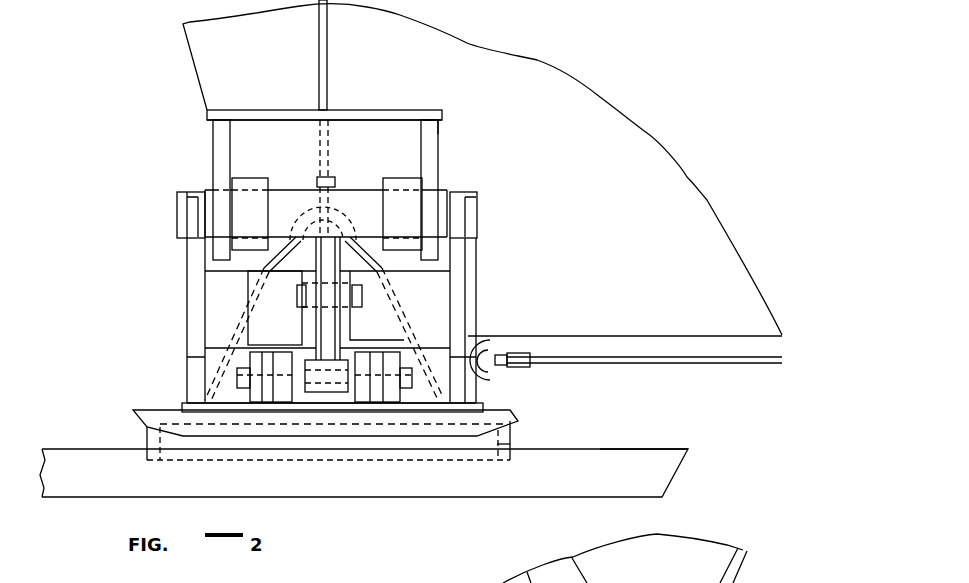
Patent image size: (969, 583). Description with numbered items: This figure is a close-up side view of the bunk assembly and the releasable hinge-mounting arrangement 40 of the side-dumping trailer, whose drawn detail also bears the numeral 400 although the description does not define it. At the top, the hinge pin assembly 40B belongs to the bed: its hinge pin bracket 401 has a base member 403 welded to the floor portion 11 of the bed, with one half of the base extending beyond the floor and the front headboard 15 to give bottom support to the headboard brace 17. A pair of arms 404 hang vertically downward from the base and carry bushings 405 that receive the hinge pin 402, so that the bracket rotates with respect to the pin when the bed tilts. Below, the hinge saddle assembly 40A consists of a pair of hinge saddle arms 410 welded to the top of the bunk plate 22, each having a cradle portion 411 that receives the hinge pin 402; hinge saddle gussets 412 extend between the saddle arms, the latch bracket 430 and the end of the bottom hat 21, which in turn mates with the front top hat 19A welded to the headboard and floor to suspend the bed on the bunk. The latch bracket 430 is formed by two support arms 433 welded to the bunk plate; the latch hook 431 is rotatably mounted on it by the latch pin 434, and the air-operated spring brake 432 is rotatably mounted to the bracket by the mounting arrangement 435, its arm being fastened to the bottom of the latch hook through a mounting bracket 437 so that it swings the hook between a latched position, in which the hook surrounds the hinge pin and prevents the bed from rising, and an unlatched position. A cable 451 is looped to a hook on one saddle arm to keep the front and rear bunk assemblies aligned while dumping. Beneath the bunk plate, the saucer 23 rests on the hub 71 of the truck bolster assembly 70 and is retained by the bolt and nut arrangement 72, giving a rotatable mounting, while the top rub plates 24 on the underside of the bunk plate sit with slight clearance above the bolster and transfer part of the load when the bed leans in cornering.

The headboard brace 17 is at (202, 58).
The front headboard 15 is at (330, 66).
The hinge pin assembly 40B is at (425, 80).
The base member 403 is at (403, 128).
The hinge pin bracket 401 is at (441, 132).
The floor portion 11 is at (635, 152).
The arms 404 is at (221, 156).
The bushings 405 is at (245, 180).
The latch hook 431 is at (327, 177).
The hinge pin 402 is at (476, 210).
The bottom hat 21 is at (293, 246).
The front top hat 19A is at (370, 242).
The cradle portion 411 is at (178, 236).
The hinge saddle arms 410 is at (465, 258).
The hinge saddle gussets 412 is at (440, 277).
The releasable hinge-mounting arrangements 40 is at (154, 313).
The latch pin 434 is at (297, 292).
The support arms 433 is at (257, 343).
The lower housing 400 is at (302, 330).
The latch bracket 430 is at (363, 332).
The hinge saddle assembly 40A is at (492, 348).
The bunk plate 22 is at (185, 404).
The saucer 23 is at (145, 442).
The top rub plates 24 is at (515, 416).
The bolt and nut arrangement 72 is at (510, 442).
The hub 71 is at (642, 456).
The truck bolster assembly 70 is at (700, 468).
The cable 451 is at (577, 360).
The mounting bracket 437 is at (315, 392).
The air-operated spring brake 432 is at (387, 392).
The mounting arrangement 435 is at (423, 392).